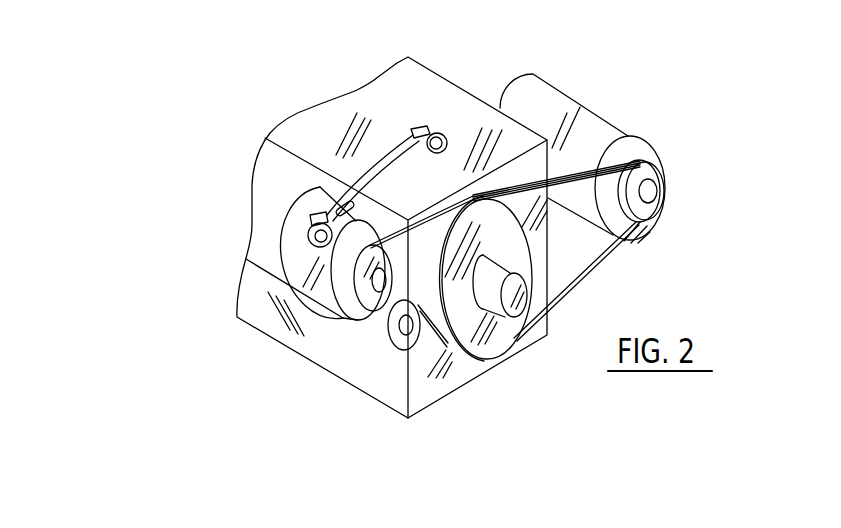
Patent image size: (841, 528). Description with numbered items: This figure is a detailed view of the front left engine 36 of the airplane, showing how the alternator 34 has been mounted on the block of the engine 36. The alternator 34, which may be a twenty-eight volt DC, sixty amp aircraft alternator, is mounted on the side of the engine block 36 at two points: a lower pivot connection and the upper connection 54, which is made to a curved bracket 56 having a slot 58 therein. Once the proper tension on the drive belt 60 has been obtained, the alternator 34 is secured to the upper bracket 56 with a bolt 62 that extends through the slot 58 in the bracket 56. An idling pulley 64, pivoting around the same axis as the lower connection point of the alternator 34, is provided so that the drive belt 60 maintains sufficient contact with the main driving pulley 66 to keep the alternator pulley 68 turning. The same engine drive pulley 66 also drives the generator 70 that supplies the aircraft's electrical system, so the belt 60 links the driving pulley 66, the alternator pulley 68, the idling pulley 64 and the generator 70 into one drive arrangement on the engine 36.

The alternator 34 is at (300, 250).
The engine 36 is at (434, 97).
The upper connection 54 is at (421, 128).
The curved bracket 56 is at (402, 164).
The slot 58 is at (311, 215).
The drive belt 60 is at (586, 286).
The bolt 62 is at (325, 213).
The idling pulley 64 is at (410, 334).
The main driving pulley 66 is at (495, 336).
The alternator pulley 68 is at (376, 297).
The generator 70 is at (600, 117).